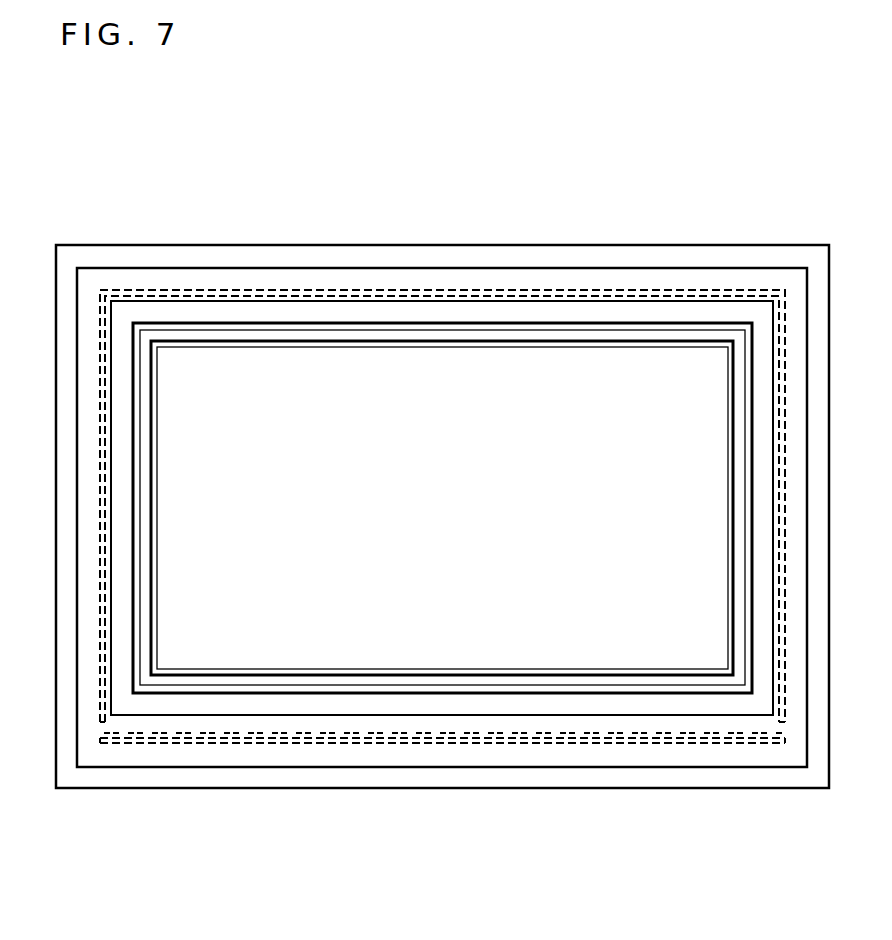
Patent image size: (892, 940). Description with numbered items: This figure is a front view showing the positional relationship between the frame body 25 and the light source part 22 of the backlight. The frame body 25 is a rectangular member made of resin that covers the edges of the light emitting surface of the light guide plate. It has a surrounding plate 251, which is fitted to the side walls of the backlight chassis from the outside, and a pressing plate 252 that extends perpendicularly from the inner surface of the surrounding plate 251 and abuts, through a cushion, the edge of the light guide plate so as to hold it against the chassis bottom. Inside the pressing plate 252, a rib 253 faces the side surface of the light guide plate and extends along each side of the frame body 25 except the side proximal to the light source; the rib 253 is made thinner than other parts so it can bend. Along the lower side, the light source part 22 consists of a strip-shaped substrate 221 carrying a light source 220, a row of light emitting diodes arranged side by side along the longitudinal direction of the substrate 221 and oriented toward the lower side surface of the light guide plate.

The frame body 25 is at (390, 153).
The surrounding plate 251 is at (428, 258).
The pressing plate 252 is at (517, 278).
The rib 253 is at (593, 293).
The light source part 22 is at (295, 855).
The light source 220 is at (342, 735).
The substrate 221 is at (420, 738).